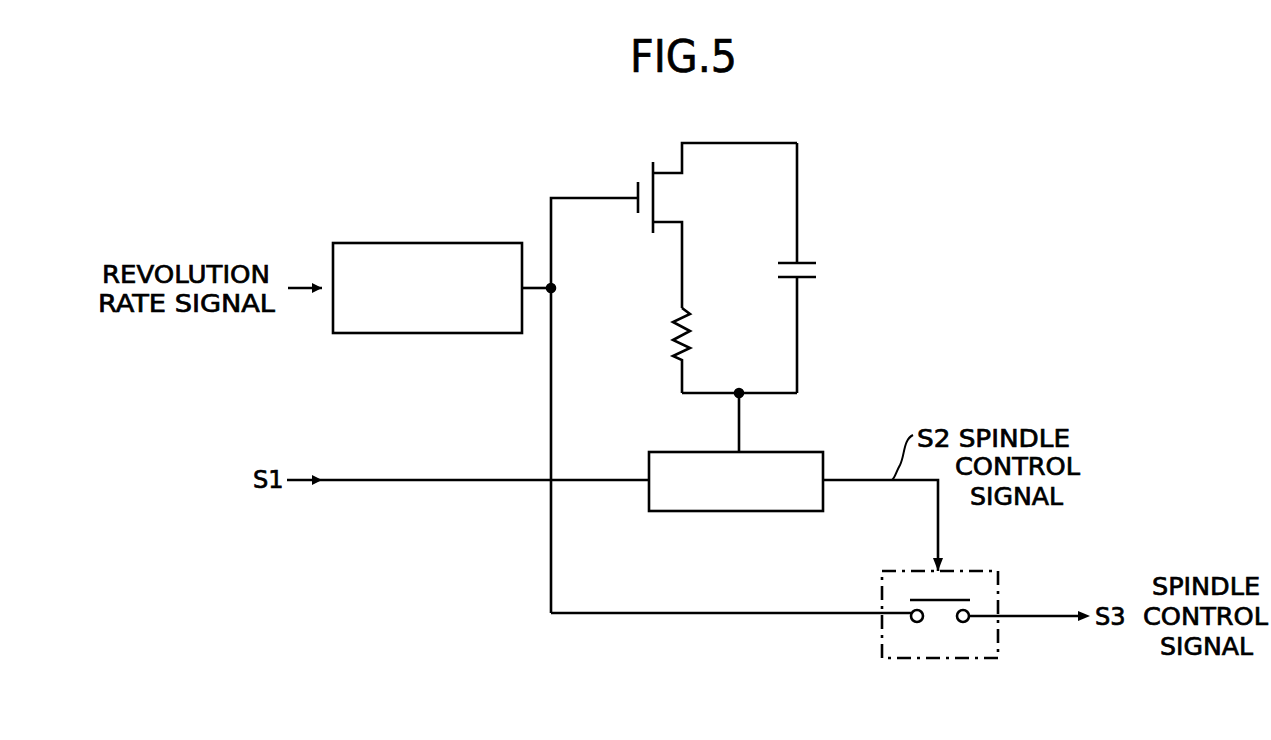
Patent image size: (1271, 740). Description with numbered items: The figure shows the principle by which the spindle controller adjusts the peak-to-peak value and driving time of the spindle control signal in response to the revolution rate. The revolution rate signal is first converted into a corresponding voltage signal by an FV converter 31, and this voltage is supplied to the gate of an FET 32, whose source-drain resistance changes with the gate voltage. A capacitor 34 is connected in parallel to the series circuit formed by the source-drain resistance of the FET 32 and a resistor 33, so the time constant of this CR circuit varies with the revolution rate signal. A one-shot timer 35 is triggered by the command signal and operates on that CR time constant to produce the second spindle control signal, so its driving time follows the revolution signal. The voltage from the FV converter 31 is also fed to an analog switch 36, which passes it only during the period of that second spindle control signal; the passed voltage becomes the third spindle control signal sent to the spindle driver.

The FV converter 31 is at (427, 243).
The FET 32 is at (647, 168).
The resistor 33 is at (670, 337).
The capacitor 34 is at (815, 270).
The one-shot timer 35 is at (800, 452).
The analog switch 36 is at (880, 593).